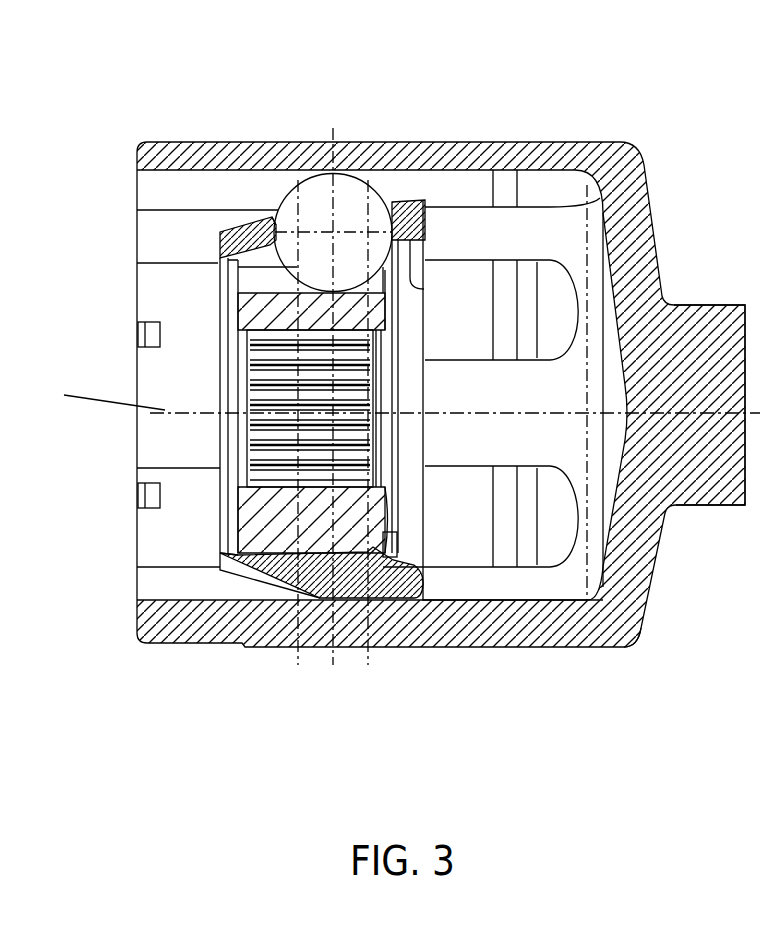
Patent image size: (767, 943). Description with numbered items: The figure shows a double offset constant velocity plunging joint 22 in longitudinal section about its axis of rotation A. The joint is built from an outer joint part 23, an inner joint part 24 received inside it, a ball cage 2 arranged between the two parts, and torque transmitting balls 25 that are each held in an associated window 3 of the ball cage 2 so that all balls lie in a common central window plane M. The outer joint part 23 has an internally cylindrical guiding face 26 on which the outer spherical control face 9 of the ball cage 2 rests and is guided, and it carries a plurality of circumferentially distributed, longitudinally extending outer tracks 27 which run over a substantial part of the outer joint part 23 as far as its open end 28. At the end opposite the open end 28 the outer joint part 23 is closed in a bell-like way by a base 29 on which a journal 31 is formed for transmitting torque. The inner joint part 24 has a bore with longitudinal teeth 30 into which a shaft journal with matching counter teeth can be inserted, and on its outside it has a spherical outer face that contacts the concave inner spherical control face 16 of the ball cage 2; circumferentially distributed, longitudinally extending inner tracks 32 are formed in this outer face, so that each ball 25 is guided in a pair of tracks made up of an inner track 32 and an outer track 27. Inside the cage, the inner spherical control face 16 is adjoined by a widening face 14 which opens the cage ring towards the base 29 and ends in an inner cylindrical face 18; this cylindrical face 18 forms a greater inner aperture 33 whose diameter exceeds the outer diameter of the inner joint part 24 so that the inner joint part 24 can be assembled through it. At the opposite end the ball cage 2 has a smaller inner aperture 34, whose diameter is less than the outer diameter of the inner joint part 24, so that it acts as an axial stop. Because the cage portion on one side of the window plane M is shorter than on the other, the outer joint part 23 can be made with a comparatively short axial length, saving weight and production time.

The constant velocity plunging joint 22 is at (187, 93).
The outer joint part 23 is at (440, 152).
The internally cylindrical guiding face 26 is at (480, 228).
The ball cage 2 is at (238, 208).
The windows 3 is at (277, 214).
The torque transmitting balls 25 is at (310, 182).
The central window plane M is at (343, 176).
The outer spherical control face 9 is at (400, 203).
The outer tracks 27 is at (160, 175).
The open end 28 is at (157, 233).
The inner tracks 32 is at (250, 278).
The longitudinal teeth 30 is at (255, 437).
The smaller inner aperture 34 is at (225, 548).
The greater inner aperture 33 is at (411, 530).
The inner cylindrical face 18 is at (428, 289).
The widening face 14 is at (397, 558).
The inner spherical control face 16 is at (236, 556).
The inner joint part 24 is at (283, 540).
The journal 31 is at (695, 315).
The base 29 is at (635, 556).
The axis of rotation A is at (102, 397).